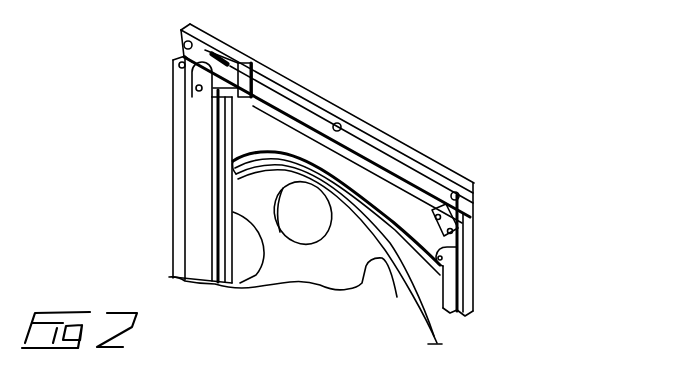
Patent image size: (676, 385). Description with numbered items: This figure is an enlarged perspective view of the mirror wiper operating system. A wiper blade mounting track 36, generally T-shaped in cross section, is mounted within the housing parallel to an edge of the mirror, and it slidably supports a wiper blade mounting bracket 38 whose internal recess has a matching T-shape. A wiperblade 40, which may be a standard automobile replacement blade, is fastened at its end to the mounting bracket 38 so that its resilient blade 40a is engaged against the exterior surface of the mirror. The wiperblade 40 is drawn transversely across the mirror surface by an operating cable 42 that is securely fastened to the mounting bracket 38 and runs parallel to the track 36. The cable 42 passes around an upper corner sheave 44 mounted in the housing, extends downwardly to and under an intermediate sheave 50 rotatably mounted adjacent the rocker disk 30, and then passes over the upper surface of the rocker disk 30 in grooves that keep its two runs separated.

The rocker disk 30 is at (318, 268).
The wiper blade mounting track 36 is at (337, 123).
The wiper blade mounting bracket 38 is at (210, 53).
The wiperblade 40 is at (188, 181).
The resilient blade 40a is at (228, 127).
The operating cable 42 is at (415, 248).
The upper corner sheave 44 is at (472, 214).
The intermediate sheave 50 is at (440, 250).